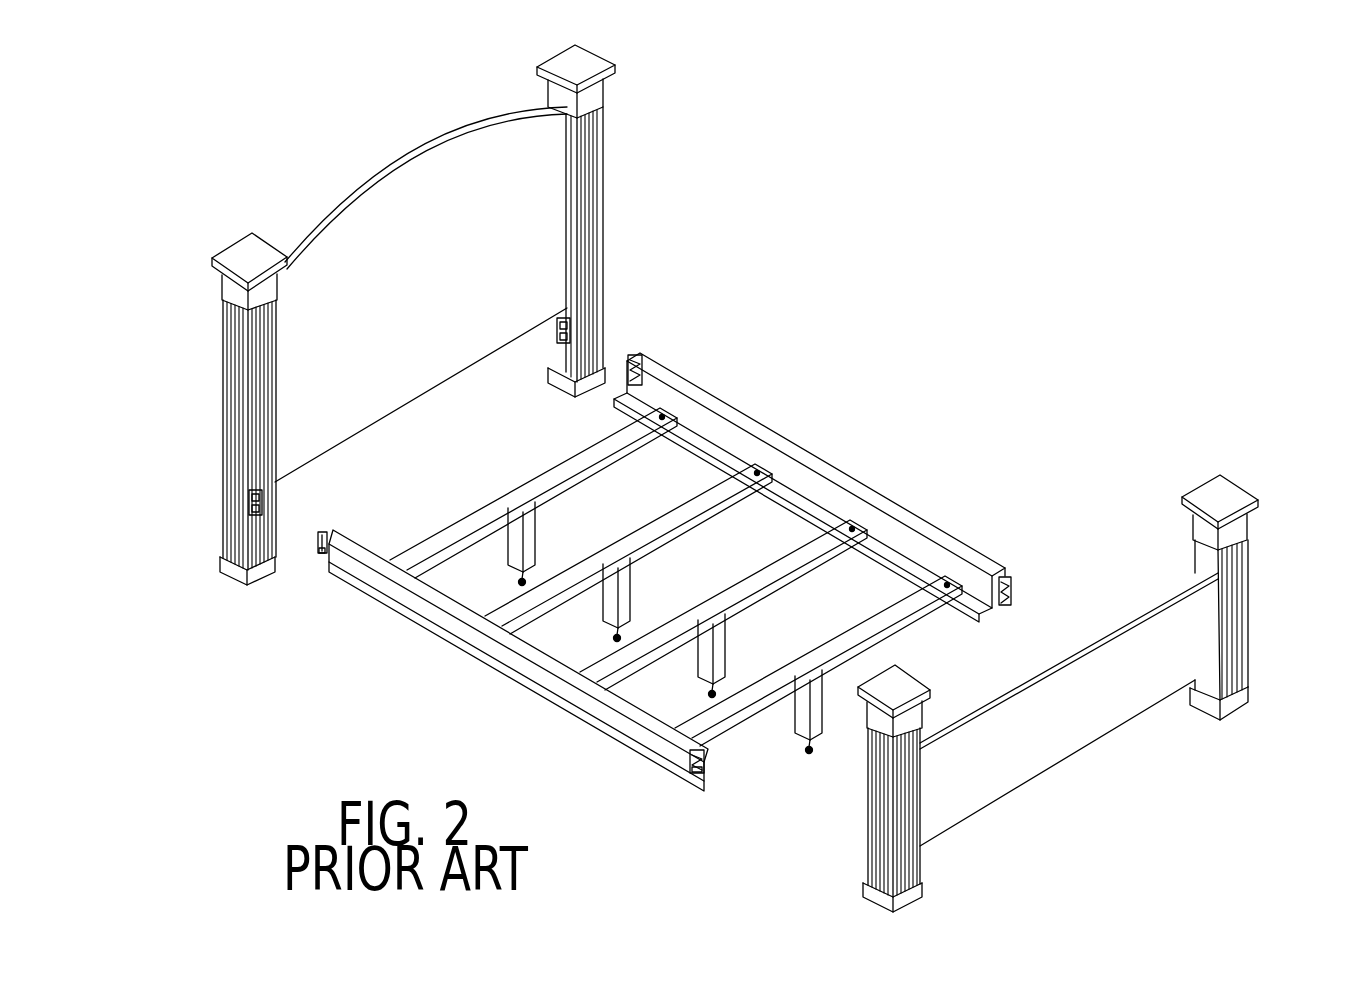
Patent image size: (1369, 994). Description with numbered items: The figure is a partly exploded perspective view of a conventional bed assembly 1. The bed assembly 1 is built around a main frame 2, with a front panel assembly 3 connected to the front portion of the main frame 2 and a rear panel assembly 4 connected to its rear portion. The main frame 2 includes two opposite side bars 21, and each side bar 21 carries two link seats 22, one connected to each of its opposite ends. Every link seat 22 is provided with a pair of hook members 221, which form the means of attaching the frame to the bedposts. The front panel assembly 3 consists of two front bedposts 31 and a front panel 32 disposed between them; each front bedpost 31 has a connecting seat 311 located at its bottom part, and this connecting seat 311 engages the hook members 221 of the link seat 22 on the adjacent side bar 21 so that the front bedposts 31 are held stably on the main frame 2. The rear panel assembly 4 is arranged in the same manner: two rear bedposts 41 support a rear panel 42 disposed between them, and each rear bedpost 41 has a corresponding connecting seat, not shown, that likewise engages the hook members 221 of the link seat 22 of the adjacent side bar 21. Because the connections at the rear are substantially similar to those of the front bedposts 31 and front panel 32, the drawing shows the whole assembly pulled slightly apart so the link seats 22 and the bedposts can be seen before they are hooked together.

The bed assembly 1 is at (678, 203).
The main frame 2 is at (848, 452).
The side bar 21 is at (765, 427).
The link seat 22 is at (647, 349).
The hook member 221 is at (321, 556).
The front panel assembly 3 is at (632, 66).
The front bedpost 31 is at (597, 259).
The connecting seat 311 is at (562, 346).
The front panel 32 is at (355, 197).
The rear panel assembly 4 is at (1236, 463).
The rear bedpost 41 is at (1234, 615).
The rear panel 42 is at (1093, 732).